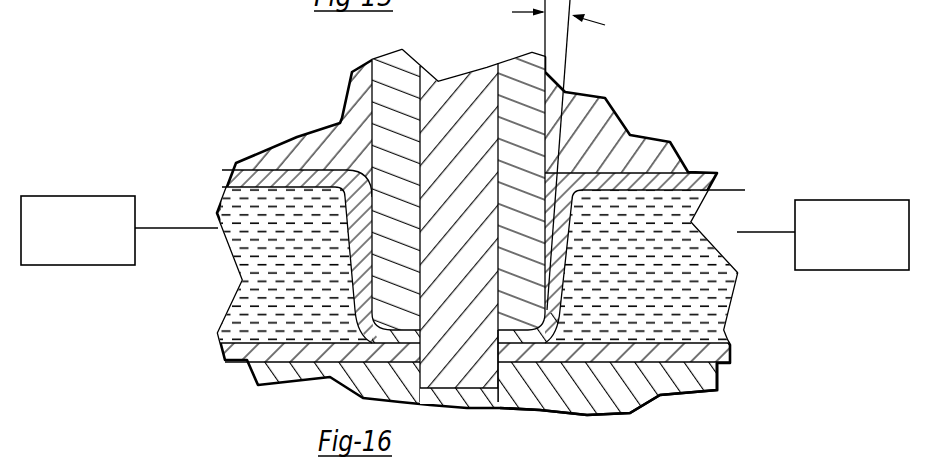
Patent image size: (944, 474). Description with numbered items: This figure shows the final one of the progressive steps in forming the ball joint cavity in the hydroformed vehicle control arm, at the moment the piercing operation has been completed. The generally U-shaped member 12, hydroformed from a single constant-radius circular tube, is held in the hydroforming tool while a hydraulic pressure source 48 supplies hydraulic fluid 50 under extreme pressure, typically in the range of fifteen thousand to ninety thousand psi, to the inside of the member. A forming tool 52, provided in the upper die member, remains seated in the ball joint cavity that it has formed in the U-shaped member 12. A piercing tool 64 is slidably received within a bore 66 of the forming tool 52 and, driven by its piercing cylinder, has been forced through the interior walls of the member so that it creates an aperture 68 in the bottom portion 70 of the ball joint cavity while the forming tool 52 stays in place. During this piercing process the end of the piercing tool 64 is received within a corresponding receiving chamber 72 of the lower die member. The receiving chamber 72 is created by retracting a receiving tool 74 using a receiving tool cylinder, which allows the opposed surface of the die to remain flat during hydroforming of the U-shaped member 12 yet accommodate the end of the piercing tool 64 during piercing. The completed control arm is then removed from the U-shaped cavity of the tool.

The U-shaped member 12 is at (480, 231).
The hydraulic pressure source 48 is at (108, 203).
The hydraulic fluid 50 is at (644, 282).
The forming tool 52 is at (565, 92).
The piercing tool 64 is at (468, 208).
The bore 66 is at (498, 105).
The aperture 68 is at (497, 343).
The bottom portion 70 is at (533, 365).
The receiving chamber 72 is at (418, 382).
The receiving tool 74 is at (458, 400).